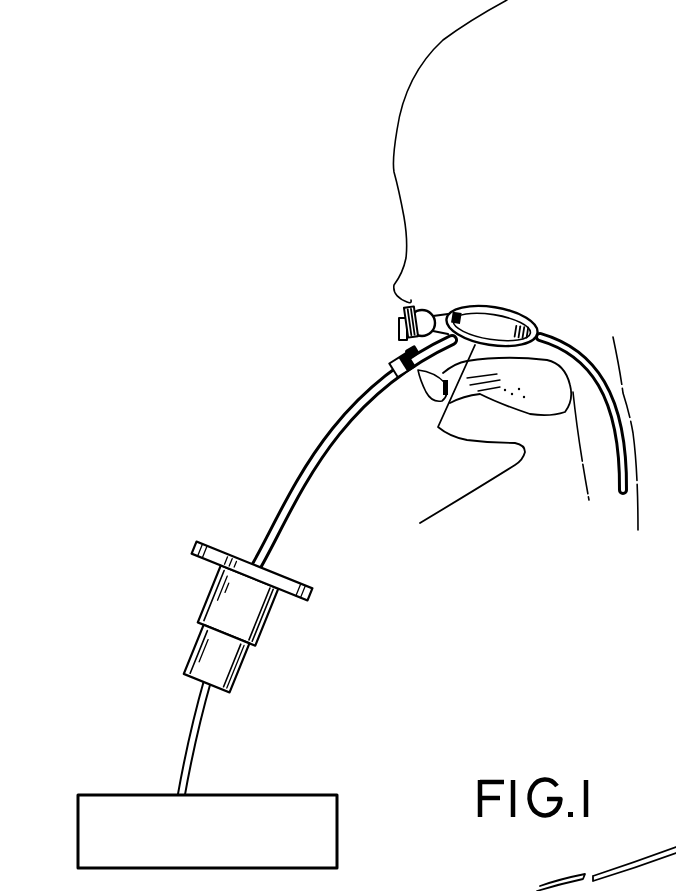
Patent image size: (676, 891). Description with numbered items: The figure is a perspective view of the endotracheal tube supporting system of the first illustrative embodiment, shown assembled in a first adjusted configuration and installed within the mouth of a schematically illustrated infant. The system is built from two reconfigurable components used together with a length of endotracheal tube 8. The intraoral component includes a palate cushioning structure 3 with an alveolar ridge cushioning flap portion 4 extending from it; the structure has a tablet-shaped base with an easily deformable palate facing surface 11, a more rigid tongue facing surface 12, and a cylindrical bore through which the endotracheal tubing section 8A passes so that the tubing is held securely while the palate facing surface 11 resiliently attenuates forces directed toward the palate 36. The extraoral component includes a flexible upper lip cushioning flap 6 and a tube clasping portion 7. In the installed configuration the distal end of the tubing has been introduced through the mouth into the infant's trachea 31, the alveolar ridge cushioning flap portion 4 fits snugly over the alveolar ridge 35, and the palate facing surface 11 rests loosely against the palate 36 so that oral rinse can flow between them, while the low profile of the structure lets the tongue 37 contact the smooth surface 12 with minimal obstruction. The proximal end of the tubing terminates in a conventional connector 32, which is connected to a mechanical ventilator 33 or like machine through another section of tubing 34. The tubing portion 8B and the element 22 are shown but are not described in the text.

The palate cushioning structure 3 is at (537, 305).
The alveolar ridge cushioning flap portion 4 is at (455, 317).
The flexible upper lip cushioning flap 6 is at (407, 322).
The tube clasping portion 7 is at (379, 369).
The endotracheal tube 8 is at (443, 443).
The endotracheal tubing section 8A is at (580, 353).
The proximal tube 8B is at (300, 477).
The palate facing surface 11 is at (487, 310).
The tongue facing surface 12 is at (442, 388).
The clamp 22 is at (404, 351).
The trachea 31 is at (600, 453).
The connector 32 is at (205, 607).
The mechanical ventilator 33 is at (78, 828).
The section of tubing 34 is at (188, 742).
The alveolar ridge 35 is at (446, 318).
The palate 36 is at (519, 305).
The tongue 37 is at (497, 393).